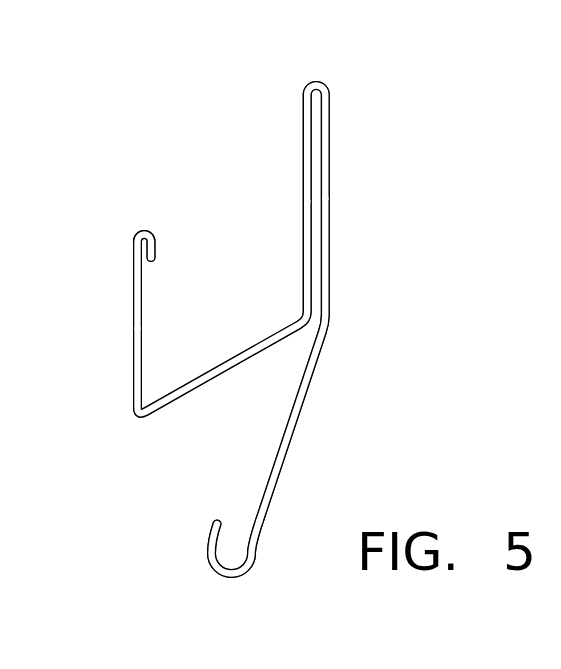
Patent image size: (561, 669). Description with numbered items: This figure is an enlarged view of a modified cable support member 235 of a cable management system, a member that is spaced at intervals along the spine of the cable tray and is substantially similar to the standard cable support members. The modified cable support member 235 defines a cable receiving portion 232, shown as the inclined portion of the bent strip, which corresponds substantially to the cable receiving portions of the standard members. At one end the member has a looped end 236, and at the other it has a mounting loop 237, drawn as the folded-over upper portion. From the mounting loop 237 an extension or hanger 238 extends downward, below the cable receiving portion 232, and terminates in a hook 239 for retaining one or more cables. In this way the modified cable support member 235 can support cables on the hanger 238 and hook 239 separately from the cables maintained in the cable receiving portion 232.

The cable receiving portion 232 is at (242, 315).
The modified cable support member 235 is at (202, 168).
The looped end 236 is at (136, 230).
The mounting loop 237 is at (325, 82).
The hanger 238 is at (302, 408).
The hook 239 is at (207, 553).